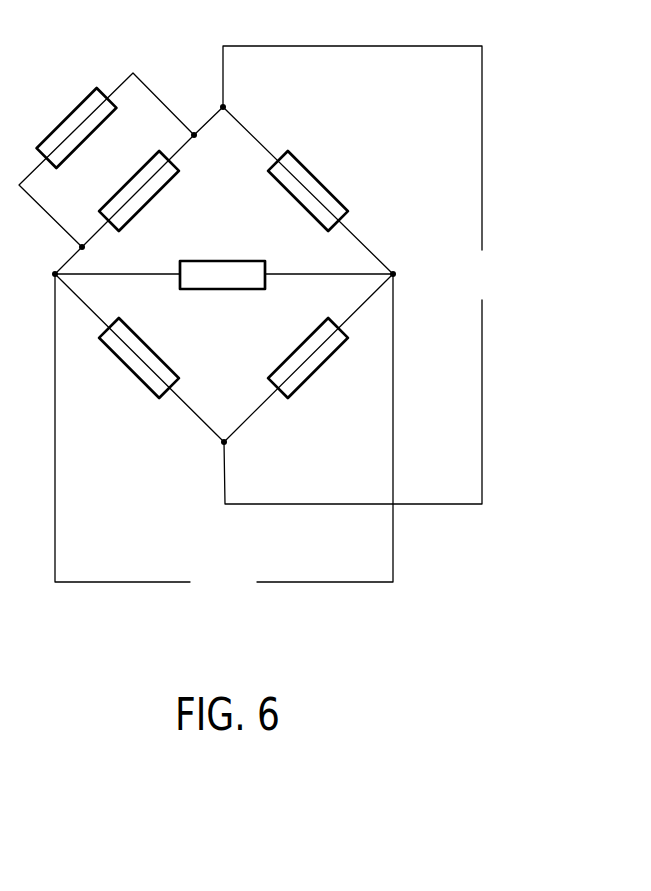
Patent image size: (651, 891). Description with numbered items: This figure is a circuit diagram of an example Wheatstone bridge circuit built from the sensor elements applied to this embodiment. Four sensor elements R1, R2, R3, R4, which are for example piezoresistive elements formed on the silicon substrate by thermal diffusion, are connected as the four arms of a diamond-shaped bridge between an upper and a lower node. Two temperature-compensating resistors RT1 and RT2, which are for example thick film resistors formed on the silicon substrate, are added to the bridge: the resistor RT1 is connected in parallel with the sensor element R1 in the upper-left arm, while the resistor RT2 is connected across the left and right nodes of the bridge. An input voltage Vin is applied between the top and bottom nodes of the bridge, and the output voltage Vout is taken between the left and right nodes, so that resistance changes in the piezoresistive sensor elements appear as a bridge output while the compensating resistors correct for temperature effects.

The temperature-compensating resistor RT1 is at (65, 113).
The temperature-compensating resistor RT2 is at (223, 260).
The sensor element R1 is at (130, 177).
The sensor element R2 is at (127, 372).
The sensor element R3 is at (316, 175).
The sensor element R4 is at (323, 365).
The input voltage Vin is at (360, 275).
The output voltage Vout is at (224, 436).